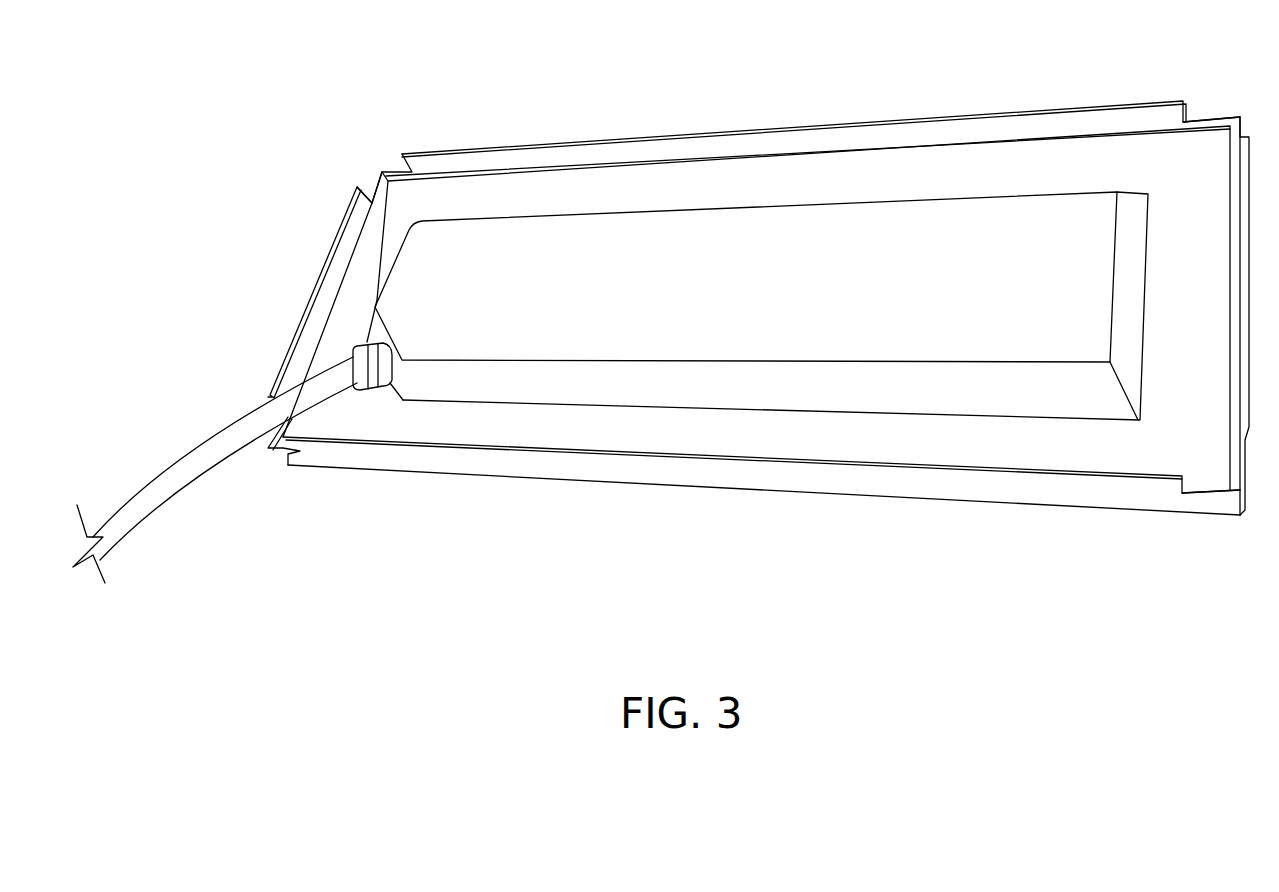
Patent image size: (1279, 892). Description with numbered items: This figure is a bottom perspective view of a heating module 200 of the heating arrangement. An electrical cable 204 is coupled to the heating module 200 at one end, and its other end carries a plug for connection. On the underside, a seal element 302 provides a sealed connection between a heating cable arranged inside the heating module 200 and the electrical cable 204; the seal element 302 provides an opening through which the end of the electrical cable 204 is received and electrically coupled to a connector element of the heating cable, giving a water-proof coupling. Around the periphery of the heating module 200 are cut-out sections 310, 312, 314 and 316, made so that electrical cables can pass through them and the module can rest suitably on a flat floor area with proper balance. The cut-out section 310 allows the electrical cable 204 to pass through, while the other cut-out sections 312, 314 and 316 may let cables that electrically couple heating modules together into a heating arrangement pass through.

The heating module 200 is at (925, 90).
The electrical cable 204 is at (207, 457).
The seal element 302 is at (375, 387).
The cut-out section 310 is at (276, 451).
The cut-out section 312 is at (1222, 494).
The cut-out section 314 is at (1217, 122).
The cut-out section 316 is at (372, 202).